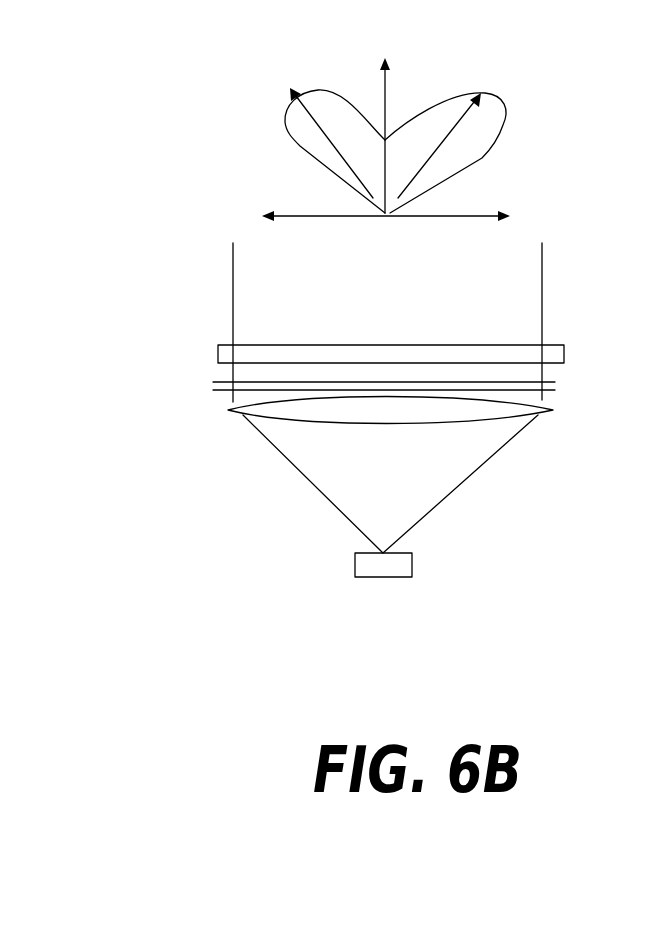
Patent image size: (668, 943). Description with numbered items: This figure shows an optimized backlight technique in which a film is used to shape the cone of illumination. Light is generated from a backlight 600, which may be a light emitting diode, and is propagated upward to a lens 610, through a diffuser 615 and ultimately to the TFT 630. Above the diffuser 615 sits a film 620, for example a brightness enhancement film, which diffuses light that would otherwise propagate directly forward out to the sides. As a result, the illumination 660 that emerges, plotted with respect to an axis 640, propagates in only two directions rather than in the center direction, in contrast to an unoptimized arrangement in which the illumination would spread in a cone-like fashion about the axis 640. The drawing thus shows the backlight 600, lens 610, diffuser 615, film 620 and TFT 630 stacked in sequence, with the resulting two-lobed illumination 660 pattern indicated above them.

The backlight 600 is at (412, 565).
The lens 610 is at (548, 428).
The diffuser 615 is at (248, 381).
The film 620 is at (565, 350).
The TFT 630 is at (530, 392).
The axis 640 is at (440, 218).
The illumination 660 is at (435, 163).